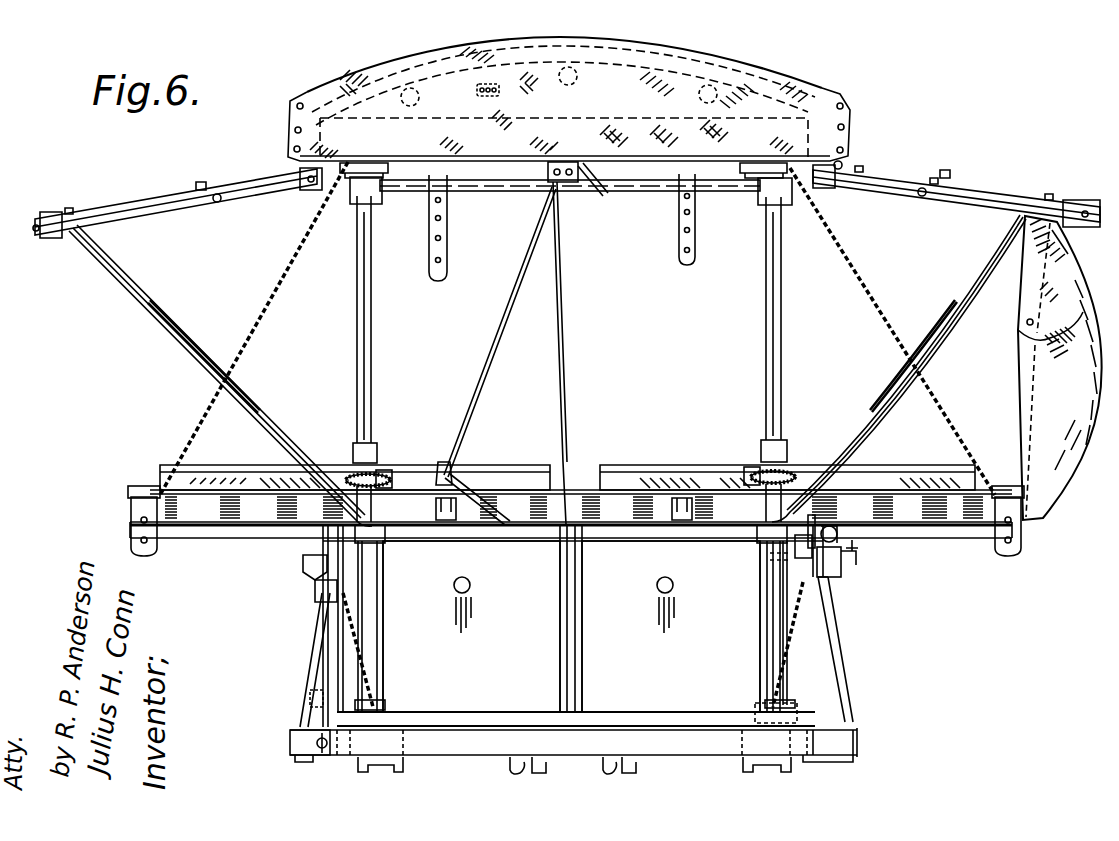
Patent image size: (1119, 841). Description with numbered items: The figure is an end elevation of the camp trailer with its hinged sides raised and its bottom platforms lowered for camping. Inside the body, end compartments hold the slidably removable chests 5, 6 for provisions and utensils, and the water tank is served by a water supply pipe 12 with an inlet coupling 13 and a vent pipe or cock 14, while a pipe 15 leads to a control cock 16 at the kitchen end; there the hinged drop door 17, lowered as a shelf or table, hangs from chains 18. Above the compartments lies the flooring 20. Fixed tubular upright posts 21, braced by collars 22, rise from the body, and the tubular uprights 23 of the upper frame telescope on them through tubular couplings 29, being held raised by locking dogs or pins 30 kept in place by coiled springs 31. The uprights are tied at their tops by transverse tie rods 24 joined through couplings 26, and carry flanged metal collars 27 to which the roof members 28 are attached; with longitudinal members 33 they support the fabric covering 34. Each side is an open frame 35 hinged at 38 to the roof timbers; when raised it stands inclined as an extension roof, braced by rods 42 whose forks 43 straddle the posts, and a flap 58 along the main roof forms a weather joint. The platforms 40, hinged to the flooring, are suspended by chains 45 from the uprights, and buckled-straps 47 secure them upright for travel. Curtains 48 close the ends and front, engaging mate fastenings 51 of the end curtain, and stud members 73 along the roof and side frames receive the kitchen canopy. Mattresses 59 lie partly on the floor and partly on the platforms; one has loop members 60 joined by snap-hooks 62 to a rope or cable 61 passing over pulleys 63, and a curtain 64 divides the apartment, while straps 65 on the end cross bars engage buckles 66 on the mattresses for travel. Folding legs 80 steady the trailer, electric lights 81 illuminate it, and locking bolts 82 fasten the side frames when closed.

The chest 5 is at (471, 626).
The chest 6 is at (671, 626).
The water supply pipe 12 is at (783, 583).
The inlet coupling 13 is at (838, 536).
The vent pipe or cock 14 is at (848, 562).
The pipe 15 is at (353, 690).
The control cock 16 is at (290, 744).
The hinged drop door 17 is at (494, 711).
The chains 18 is at (795, 620).
The flooring 20 is at (520, 529).
The upright posts 21 is at (790, 641).
The collars 22 is at (793, 707).
The uprights 23 is at (766, 284).
The transverse tie rods 24 is at (656, 185).
The couplings 26 is at (366, 197).
The flanged metal collars 27 is at (388, 172).
The members of the top or roof 28 is at (745, 166).
The tubular couplings 29 is at (765, 445).
The locking dogs or pins 30 is at (390, 478).
The coiled springs 31 is at (792, 466).
The longitudinal members 33 is at (808, 130).
The covering 34 is at (827, 113).
The open frame 35 is at (990, 194).
The hinge 38 is at (326, 186).
The leaves or platforms 40 is at (950, 530).
The rods 42 is at (990, 285).
The fork 43 is at (765, 531).
The chains 45 is at (890, 332).
The buckled-straps 47 is at (1008, 548).
The curtains 48 is at (1045, 395).
The mate fastenings 51 is at (922, 196).
The strip or flap 58 is at (842, 164).
The mattresses 59 is at (661, 463).
The member 60 is at (505, 463).
The rope or cable 61 is at (516, 277).
The snap-hooks 62 is at (432, 460).
The pulleys 63 is at (572, 185).
The curtain 64 is at (561, 330).
The straps 65 is at (696, 222).
The buckles 66 is at (675, 516).
The stud members 73 is at (945, 180).
The legs 80 is at (668, 755).
The electric lights 81 is at (699, 95).
The locking bolts 82 is at (1088, 203).